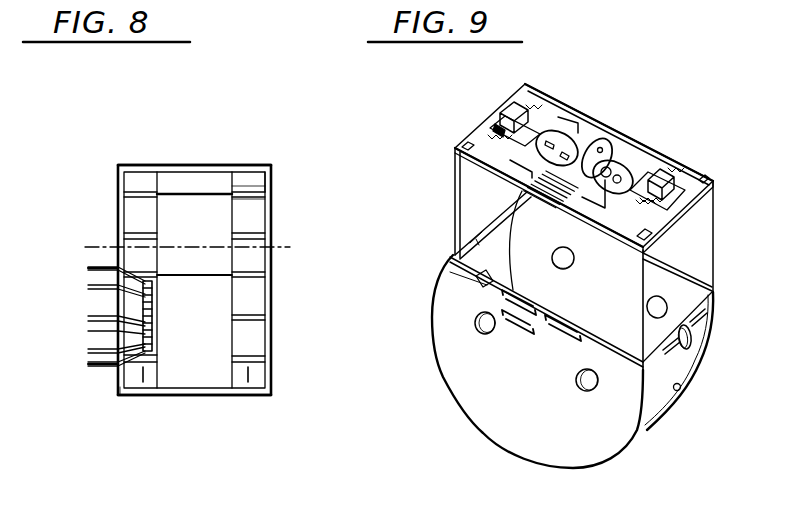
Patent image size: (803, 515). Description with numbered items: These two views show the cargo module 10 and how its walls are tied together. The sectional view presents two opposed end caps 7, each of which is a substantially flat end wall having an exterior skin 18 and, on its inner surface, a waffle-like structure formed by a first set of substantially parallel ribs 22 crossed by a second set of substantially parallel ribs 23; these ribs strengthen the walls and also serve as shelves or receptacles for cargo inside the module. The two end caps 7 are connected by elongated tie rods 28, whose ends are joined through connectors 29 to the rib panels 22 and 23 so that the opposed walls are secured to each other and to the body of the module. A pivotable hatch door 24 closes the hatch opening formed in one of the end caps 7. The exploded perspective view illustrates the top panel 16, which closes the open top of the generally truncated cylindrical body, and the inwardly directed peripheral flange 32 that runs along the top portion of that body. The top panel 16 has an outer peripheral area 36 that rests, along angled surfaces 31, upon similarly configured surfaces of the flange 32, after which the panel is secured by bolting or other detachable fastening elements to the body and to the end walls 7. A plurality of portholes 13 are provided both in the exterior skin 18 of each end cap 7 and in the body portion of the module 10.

In FIG. 8, the module 10 is at (188, 156).
In FIG. 8, the top panel 16 is at (246, 163).
In FIG. 9, the top panel 16 is at (548, 99).
In FIG. 8, the angled surfaces 31 is at (274, 172).
In FIG. 8, the connectors 29 is at (267, 186).
In FIG. 8, the ribs of second set 23 is at (269, 198).
In FIG. 8, the tie rods 28 is at (168, 194).
In FIG. 8, the hatch door 24 is at (150, 302).
In FIG. 8, the end caps 7 is at (120, 387).
In FIG. 8, the ribs of first set 22 is at (226, 401).
In FIG. 9, the outer peripheral area 36 is at (476, 122).
In FIG. 9, the inwardly directed peripheral flange 32 is at (699, 270).
In FIG. 9, the portholes 13 is at (582, 391).
In FIG. 9, the exterior skin 18 is at (512, 428).